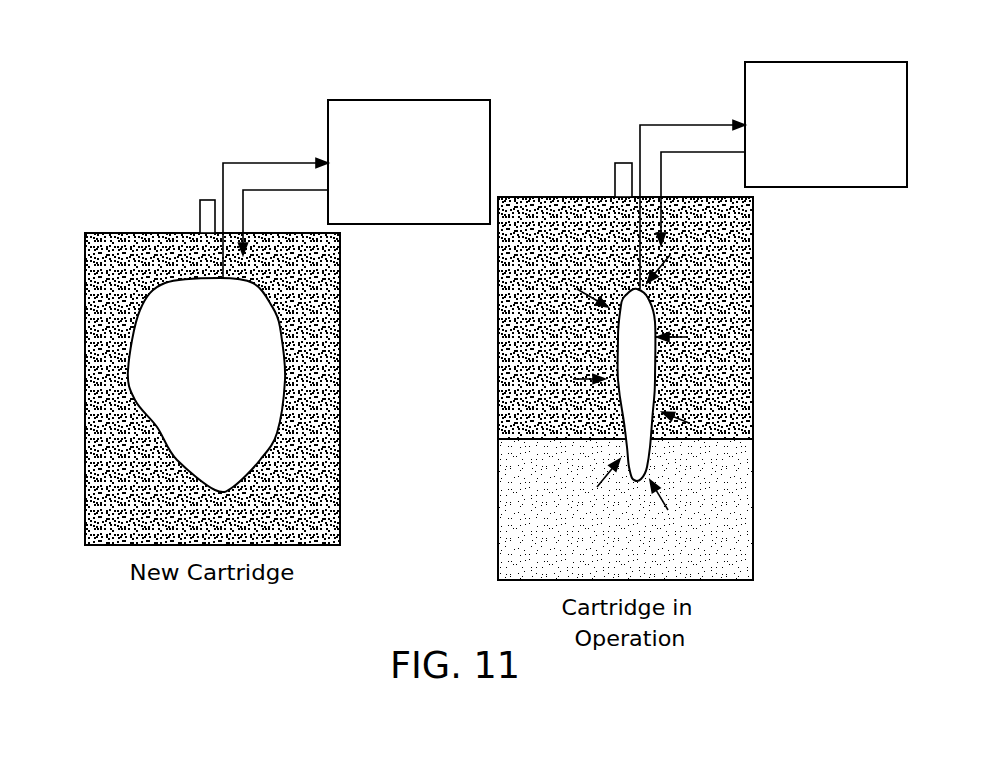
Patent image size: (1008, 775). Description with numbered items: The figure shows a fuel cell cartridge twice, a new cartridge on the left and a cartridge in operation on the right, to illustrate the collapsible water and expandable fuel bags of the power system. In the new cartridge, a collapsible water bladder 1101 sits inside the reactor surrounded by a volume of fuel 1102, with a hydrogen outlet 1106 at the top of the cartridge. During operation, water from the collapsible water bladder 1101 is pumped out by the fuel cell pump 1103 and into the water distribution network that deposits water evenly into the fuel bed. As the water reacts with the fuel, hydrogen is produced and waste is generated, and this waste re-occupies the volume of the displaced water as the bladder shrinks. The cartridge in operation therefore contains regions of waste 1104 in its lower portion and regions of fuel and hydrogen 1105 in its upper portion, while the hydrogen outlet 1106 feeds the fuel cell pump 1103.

The collapsible water bladder 1101 is at (128, 372).
The fuel 1102 is at (118, 497).
The fuel cell pump 1103 is at (420, 100).
The regions of waste 1104 is at (733, 492).
The fuel/hydrogen mixture 1105 is at (733, 350).
The hydrogen outlet 1106 is at (200, 214).